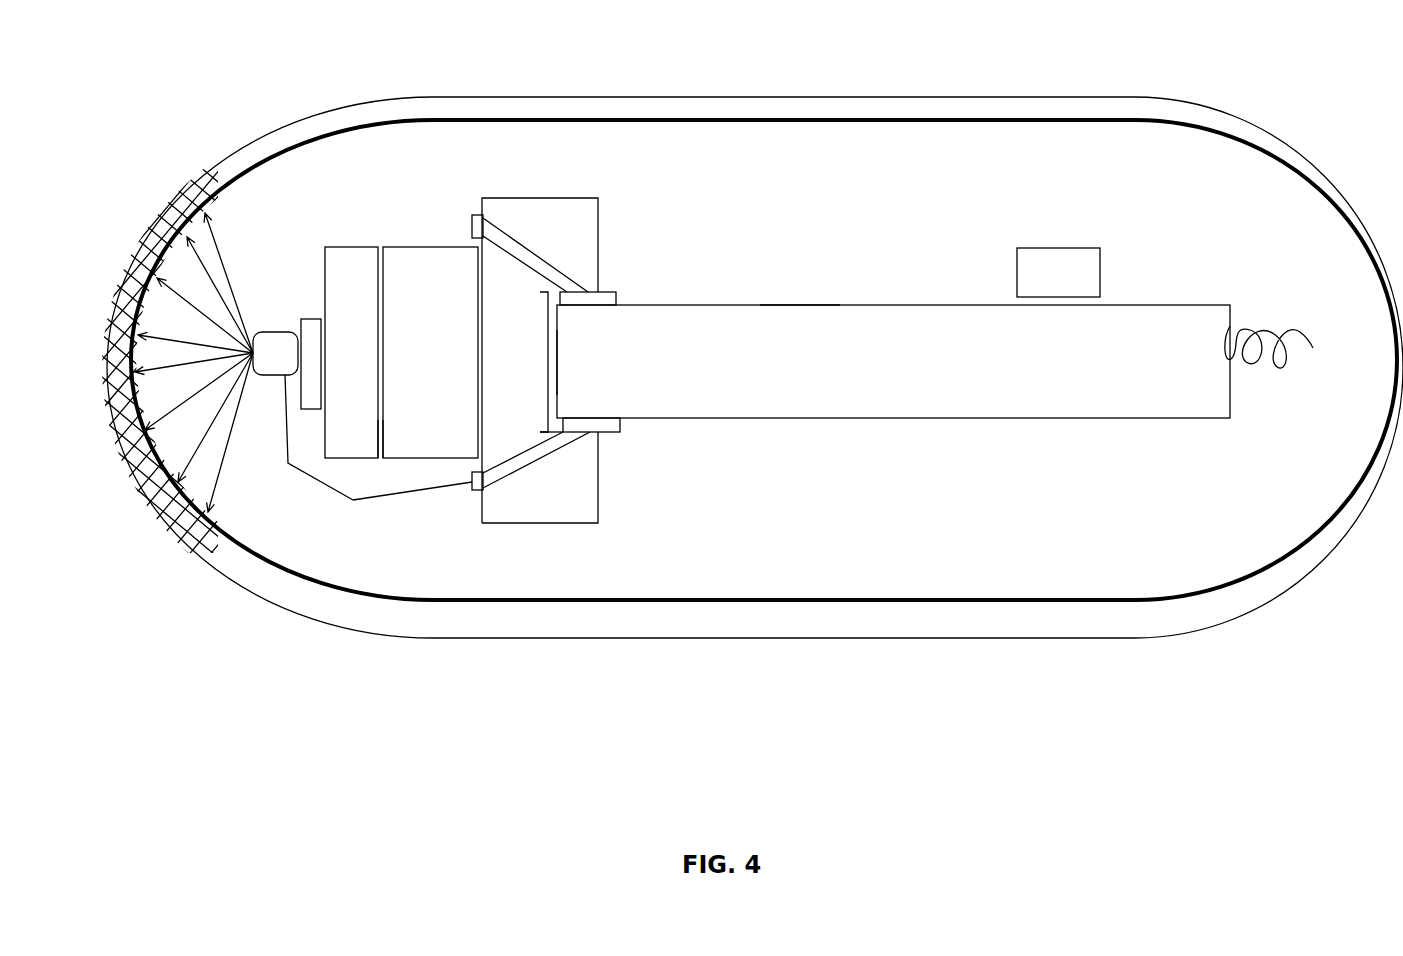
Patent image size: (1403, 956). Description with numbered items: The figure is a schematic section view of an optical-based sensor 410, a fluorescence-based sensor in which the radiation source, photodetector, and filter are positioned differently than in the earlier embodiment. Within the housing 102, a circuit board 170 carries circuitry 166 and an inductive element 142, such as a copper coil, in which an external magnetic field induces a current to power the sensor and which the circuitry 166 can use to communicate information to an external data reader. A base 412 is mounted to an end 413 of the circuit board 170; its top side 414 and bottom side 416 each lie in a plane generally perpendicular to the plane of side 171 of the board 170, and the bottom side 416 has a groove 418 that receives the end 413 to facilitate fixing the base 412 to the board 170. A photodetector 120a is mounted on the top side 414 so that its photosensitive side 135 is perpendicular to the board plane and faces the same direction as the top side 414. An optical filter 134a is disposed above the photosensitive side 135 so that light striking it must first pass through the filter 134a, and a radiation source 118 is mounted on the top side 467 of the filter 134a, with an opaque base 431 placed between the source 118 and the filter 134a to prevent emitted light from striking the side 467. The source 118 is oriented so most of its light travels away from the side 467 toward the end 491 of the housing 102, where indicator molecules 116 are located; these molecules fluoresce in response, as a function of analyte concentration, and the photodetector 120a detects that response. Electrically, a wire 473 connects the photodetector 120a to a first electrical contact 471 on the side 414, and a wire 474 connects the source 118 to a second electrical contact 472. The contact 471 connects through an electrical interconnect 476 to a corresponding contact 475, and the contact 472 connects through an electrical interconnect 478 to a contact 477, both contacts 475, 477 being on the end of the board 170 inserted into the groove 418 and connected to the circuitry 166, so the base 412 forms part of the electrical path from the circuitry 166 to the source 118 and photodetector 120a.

The optical-based sensor 410 is at (397, 79).
The housing 102 is at (890, 125).
The end of housing 491 is at (222, 195).
The indicator molecules 116 is at (168, 210).
The radiation source 118 is at (287, 333).
The opaque base 431 is at (317, 322).
The optical filter 134a is at (333, 278).
The photodetector 120a is at (398, 265).
The photosensitive side 135 is at (382, 420).
The wire 473 is at (452, 251).
The base 412 is at (567, 199).
The bottom side of base 416 is at (600, 495).
The top side of base 414 is at (485, 523).
The groove 418 is at (547, 296).
The first electrical contact 471 is at (480, 221).
The second electrical contact 472 is at (483, 490).
The electrical interconnect 476 is at (532, 260).
The electrical interconnect 478 is at (522, 463).
The contact 475 is at (602, 305).
The contact 477 is at (608, 420).
The circuit board 170 is at (950, 405).
The side of circuit board 171 is at (785, 303).
The end of circuit board 413 is at (587, 388).
The circuitry 166 is at (1057, 248).
The inductive element 142 is at (1280, 367).
The top side of filter 467 is at (323, 448).
The wire 474 is at (353, 500).